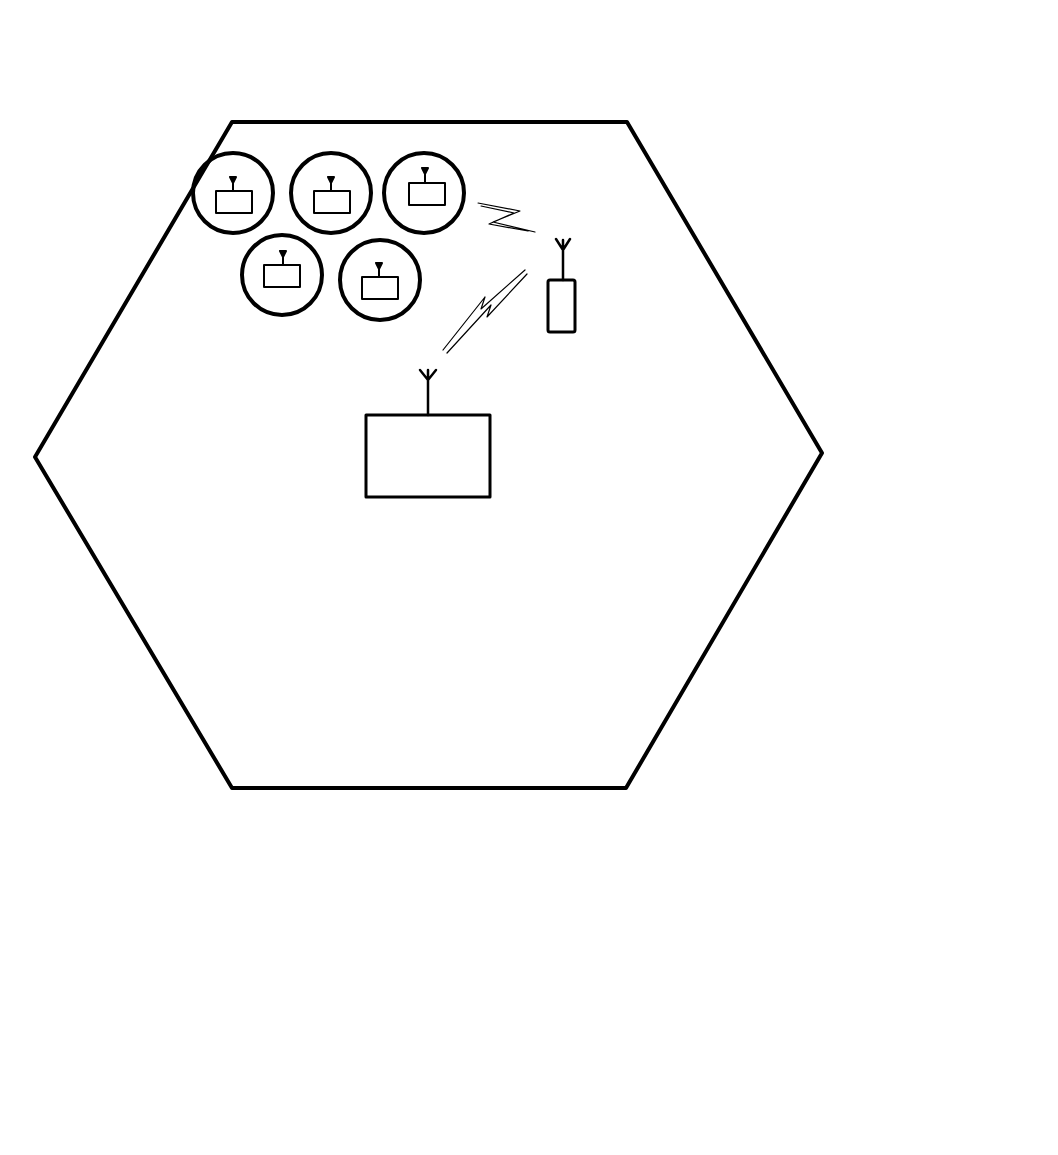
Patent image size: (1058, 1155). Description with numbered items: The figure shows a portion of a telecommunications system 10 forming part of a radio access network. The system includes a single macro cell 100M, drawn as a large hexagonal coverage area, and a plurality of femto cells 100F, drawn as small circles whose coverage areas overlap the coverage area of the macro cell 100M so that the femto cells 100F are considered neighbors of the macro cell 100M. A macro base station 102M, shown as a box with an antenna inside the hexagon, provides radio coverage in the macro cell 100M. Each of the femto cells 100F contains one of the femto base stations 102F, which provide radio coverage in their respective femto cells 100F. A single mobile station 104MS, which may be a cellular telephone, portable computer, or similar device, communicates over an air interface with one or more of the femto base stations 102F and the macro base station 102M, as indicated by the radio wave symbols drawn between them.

The telecommunications system 10 is at (712, 98).
The macro cell 100M is at (822, 453).
The femto cells 100F is at (463, 193).
The femto base stations 102F is at (448, 193).
The macro base station 102M is at (428, 433).
The mobile station 104MS is at (575, 307).